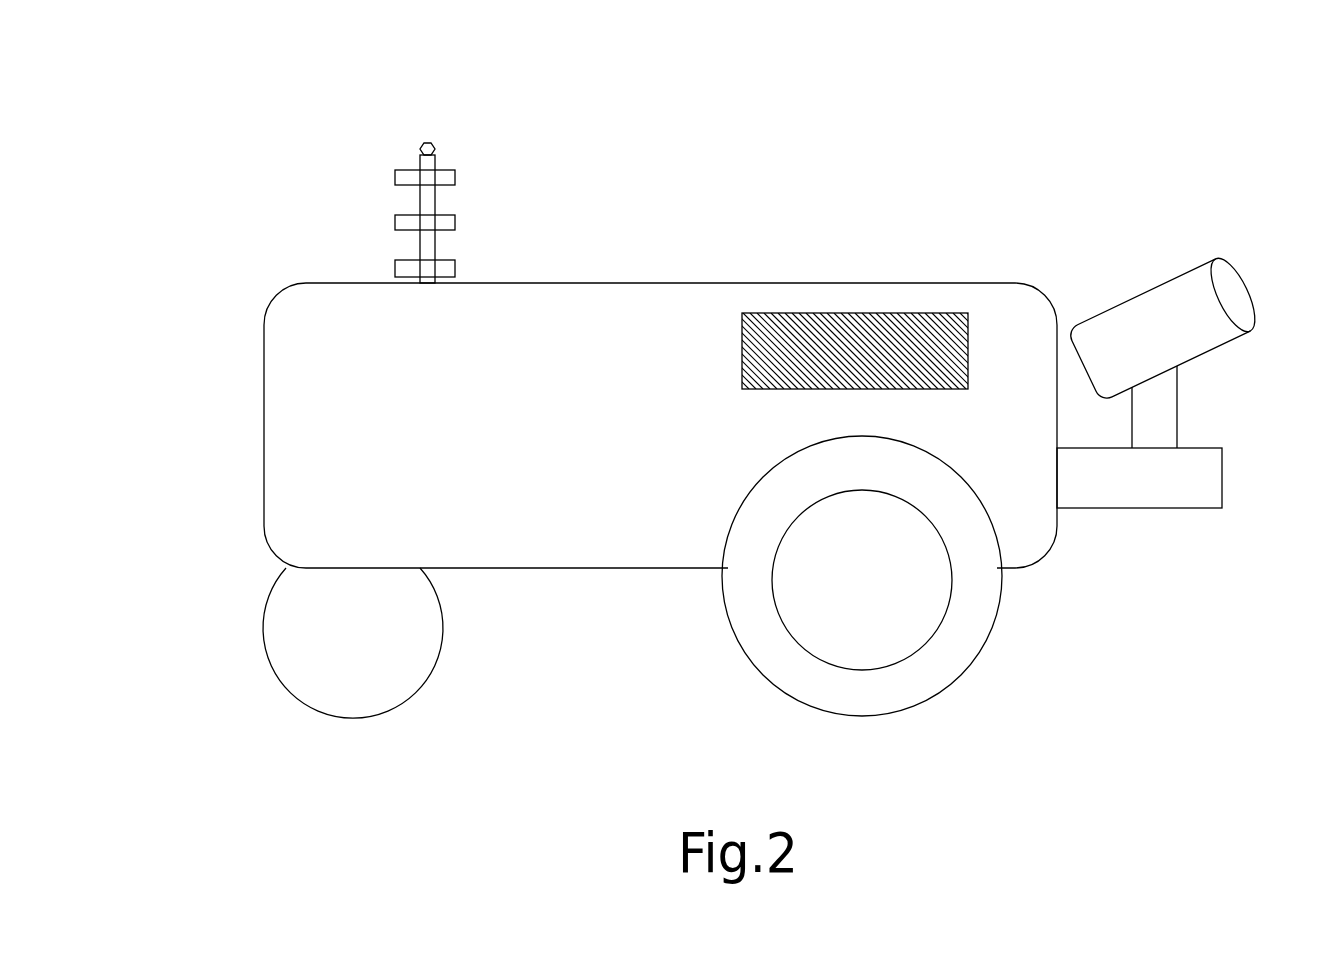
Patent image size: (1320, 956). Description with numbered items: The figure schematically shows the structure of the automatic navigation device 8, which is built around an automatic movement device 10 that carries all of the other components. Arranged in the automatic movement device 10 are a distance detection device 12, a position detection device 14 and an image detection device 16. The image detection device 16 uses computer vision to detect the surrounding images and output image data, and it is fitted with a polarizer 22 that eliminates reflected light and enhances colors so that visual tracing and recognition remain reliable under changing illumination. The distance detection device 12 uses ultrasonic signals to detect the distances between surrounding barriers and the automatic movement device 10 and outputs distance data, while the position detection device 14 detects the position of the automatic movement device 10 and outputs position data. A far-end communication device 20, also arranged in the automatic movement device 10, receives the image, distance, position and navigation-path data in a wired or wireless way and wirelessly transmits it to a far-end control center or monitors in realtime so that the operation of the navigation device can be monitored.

The automatic navigation device 8 is at (777, 130).
The automatic movement device 10 is at (264, 390).
The distance detection device 12 is at (757, 376).
The position detection device 14 is at (938, 600).
The image detection device 16 is at (1160, 277).
The far-end communication device 20 is at (400, 223).
The polarizer 22 is at (1237, 267).